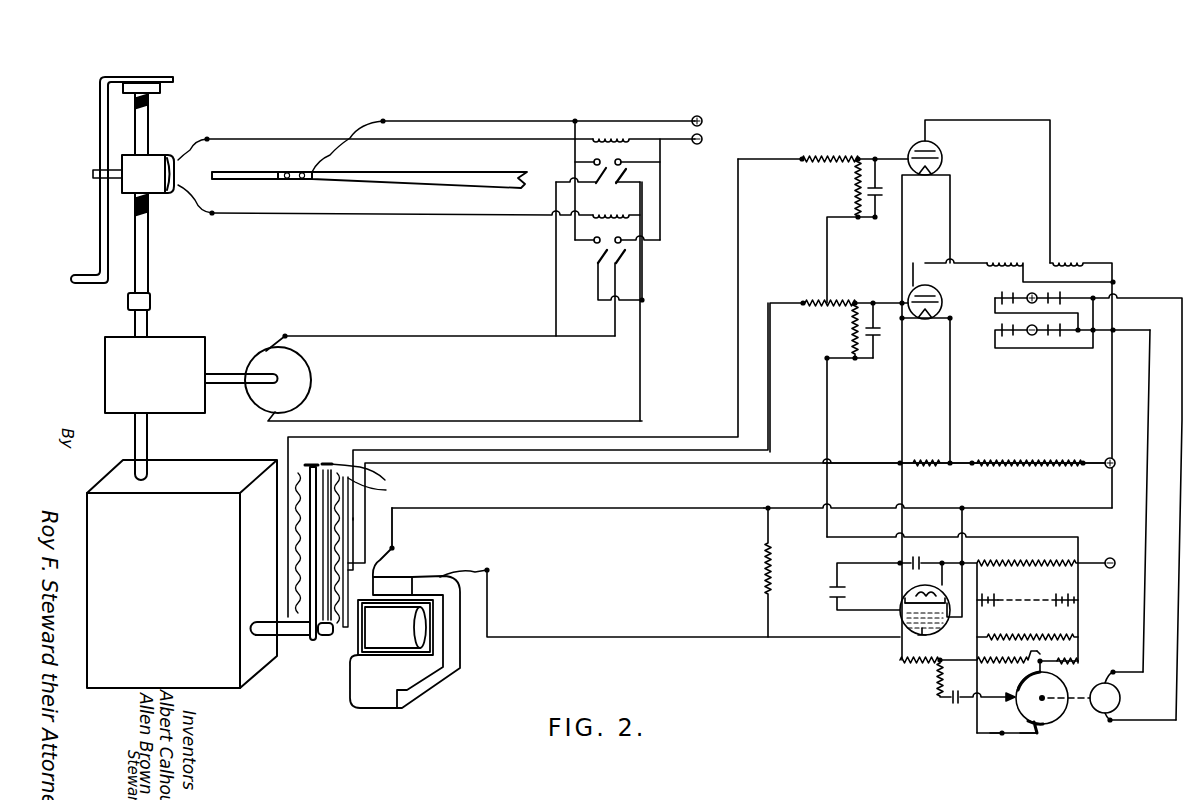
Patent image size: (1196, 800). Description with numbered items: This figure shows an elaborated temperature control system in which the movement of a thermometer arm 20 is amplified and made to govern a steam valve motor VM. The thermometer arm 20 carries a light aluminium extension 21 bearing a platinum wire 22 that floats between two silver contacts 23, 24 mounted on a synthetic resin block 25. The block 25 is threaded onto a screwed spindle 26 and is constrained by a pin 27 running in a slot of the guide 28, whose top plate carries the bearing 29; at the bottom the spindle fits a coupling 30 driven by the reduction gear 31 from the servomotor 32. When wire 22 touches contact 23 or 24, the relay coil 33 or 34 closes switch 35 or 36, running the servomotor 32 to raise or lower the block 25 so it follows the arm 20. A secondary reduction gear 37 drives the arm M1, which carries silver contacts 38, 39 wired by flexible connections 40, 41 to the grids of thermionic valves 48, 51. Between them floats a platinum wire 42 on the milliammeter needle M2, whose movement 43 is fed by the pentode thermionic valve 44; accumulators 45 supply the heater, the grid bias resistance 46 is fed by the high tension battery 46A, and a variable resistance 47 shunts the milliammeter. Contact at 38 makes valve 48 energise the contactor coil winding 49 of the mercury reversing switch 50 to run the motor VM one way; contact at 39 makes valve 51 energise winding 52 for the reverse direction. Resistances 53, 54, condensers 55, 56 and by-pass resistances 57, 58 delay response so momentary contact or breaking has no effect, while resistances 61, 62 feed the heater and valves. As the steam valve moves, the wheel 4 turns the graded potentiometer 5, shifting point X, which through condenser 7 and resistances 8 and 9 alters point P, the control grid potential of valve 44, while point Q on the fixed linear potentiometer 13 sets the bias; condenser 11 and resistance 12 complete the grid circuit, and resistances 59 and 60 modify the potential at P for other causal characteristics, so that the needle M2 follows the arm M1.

The wheel 4 is at (1033, 701).
The graded potentiometer 5 is at (1028, 742).
The condenser 7 is at (981, 711).
The resistance 8 is at (936, 678).
The resistance 9 is at (921, 650).
The condenser 11 is at (853, 586).
The resistance 12 is at (1009, 652).
The linear potentiometer 13 is at (1027, 625).
The thermometer arm 20 is at (367, 180).
The light aluminium extension 21 is at (257, 180).
The platinum wire 22 is at (212, 173).
The silver contact 23 is at (181, 160).
The silver contact 24 is at (181, 186).
The synthetic resin block 25 is at (165, 153).
The screwed spindle 26 is at (148, 263).
The pin 27 is at (110, 180).
The guide 28 is at (100, 233).
The bearing 29 is at (160, 88).
The coupling 30 is at (128, 304).
The reduction gear 31 is at (191, 408).
The servomotor 32 is at (443, 377).
The relay coil 33 is at (615, 139).
The relay coil 34 is at (637, 216).
The switch 35 is at (630, 176).
The switch 36 is at (633, 254).
The secondary reduction gear 37 is at (182, 574).
The silver contact 38 is at (313, 465).
The silver contact 39 is at (328, 464).
The flexible connection 40 is at (287, 449).
The flexible connection 41 is at (354, 518).
The platinum wire 42 is at (370, 480).
The milliammeter movement 43 is at (358, 653).
The pentode thermionic valve 44 is at (910, 633).
The accumulators 45 is at (922, 566).
The grid bias resistance 46 is at (971, 633).
The high tension battery 46A is at (1027, 591).
The variable resistance 47 is at (920, 570).
The thermionic valve 48 is at (976, 390).
The contactor coil winding 49 is at (1081, 373).
The mercury reversing switch 50 is at (1074, 506).
The thermionic valve 51 is at (943, 351).
The contactor winding 52 is at (1051, 263).
The resistance 53 is at (823, 145).
The resistance 54 is at (839, 365).
The condenser 55 is at (886, 189).
The condenser 56 is at (881, 332).
The by-pass resistance 57 is at (848, 231).
The by-pass resistance 58 is at (848, 420).
The resistance 59 is at (989, 742).
The resistance 60 is at (1058, 660).
The resistance 61 is at (1035, 463).
The resistance 62 is at (914, 463).
The indicator arm M1 is at (320, 612).
The milliammeter needle M2 is at (326, 568).
The point P is at (900, 612).
The point Q is at (1050, 650).
The point X is at (1007, 688).
The steam valve motor VM is at (1133, 695).